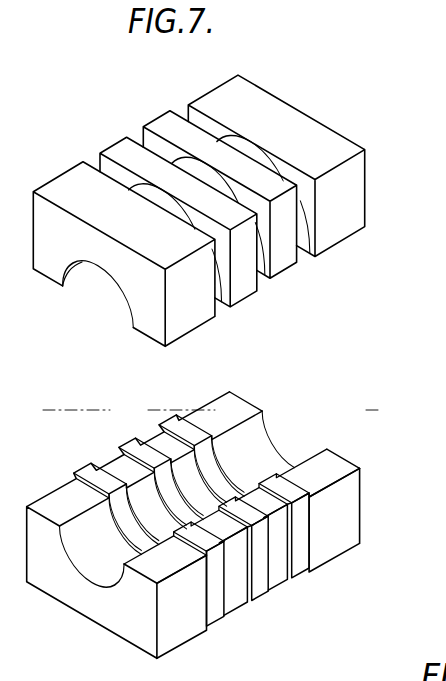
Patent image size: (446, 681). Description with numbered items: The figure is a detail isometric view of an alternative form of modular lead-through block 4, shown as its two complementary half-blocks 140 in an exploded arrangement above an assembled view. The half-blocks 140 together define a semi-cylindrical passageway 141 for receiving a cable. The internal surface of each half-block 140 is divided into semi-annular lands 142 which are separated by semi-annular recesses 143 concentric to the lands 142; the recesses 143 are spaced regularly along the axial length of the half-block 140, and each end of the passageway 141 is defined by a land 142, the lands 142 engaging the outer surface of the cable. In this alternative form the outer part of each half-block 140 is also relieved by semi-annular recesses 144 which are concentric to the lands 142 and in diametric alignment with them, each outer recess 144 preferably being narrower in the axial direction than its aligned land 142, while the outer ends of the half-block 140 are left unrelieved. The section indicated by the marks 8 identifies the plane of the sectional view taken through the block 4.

The lead-through block 4 is at (373, 78).
The section line for FIG. 8 is at (30, 122).
The half-block 140 is at (277, 127).
The semi-cylindrical passageway 141 is at (103, 293).
The semi-annular land 142 is at (82, 532).
The semi-annular recess 143 is at (120, 457).
The semi-annular recess 144 is at (182, 115).